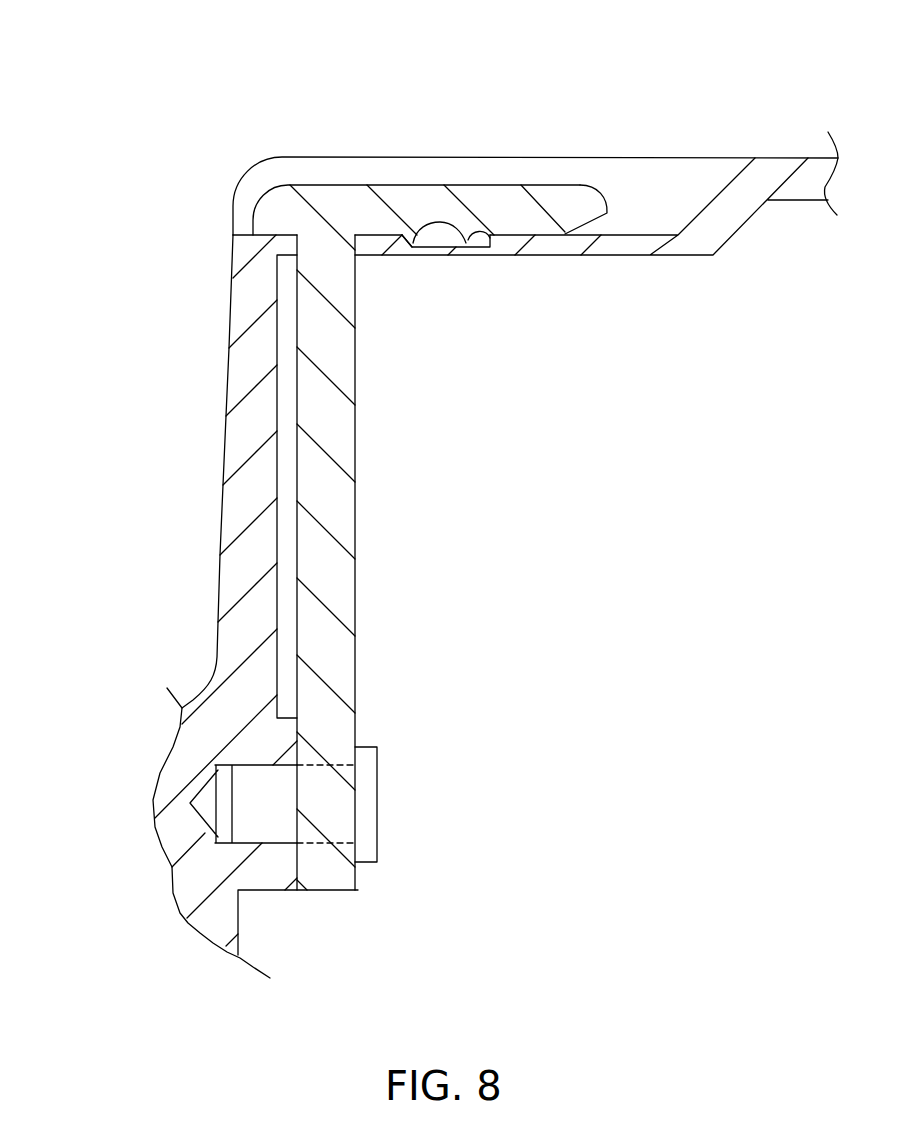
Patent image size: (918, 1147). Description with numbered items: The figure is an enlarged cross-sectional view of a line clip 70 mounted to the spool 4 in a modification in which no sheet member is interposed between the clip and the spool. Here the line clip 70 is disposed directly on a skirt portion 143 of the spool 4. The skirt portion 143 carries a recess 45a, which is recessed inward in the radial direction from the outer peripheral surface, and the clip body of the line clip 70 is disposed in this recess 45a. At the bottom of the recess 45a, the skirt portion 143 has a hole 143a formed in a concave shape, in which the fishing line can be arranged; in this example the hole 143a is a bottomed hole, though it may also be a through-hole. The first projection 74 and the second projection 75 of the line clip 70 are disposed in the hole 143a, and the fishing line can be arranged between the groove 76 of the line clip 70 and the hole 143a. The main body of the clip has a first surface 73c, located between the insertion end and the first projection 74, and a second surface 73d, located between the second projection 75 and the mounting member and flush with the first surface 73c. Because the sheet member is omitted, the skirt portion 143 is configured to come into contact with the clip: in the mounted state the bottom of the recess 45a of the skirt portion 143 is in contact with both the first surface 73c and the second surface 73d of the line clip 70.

The spool 4 is at (190, 513).
The skirt portion 143 is at (224, 176).
The hole 143a is at (437, 243).
The line clip 70 is at (385, 171).
The first surface 73c is at (523, 237).
The second surface 73d is at (380, 237).
The first projection 74 is at (477, 247).
The second projection 75 is at (408, 250).
The groove 76 is at (488, 245).
The recess 45a is at (649, 235).